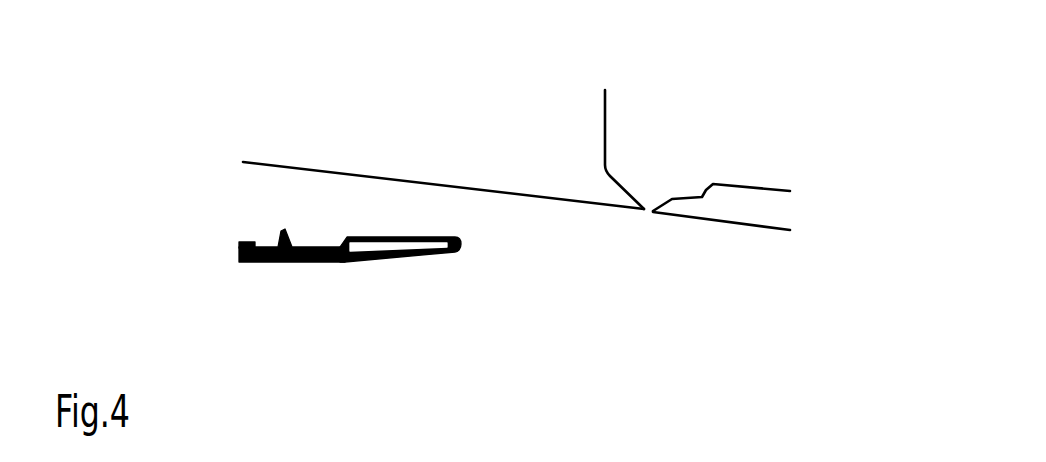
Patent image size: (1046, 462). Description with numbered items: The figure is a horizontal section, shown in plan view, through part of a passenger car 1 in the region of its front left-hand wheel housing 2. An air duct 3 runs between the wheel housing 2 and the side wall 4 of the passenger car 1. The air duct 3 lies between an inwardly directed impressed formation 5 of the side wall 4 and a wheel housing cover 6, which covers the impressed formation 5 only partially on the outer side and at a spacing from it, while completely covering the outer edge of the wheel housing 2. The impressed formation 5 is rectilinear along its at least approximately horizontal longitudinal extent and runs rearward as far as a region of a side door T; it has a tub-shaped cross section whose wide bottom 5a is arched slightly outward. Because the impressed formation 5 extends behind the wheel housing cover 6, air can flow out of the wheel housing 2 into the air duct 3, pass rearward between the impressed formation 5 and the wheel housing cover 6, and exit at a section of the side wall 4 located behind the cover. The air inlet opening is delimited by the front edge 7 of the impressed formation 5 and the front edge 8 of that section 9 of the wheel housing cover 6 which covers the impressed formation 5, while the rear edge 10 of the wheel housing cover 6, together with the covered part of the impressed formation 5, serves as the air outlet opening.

The passenger car 1 is at (763, 136).
The wheel housing 2 is at (203, 212).
The air duct 3 is at (340, 200).
The side wall 4 is at (443, 162).
The impressed formation 5 is at (443, 162).
The bottom 5a is at (475, 190).
The wheel housing cover 6 is at (317, 275).
The front edge 7 is at (243, 154).
The front edge 8 is at (242, 252).
The section 9 is at (360, 262).
The rear edge 10 is at (459, 246).
The side door T is at (740, 227).